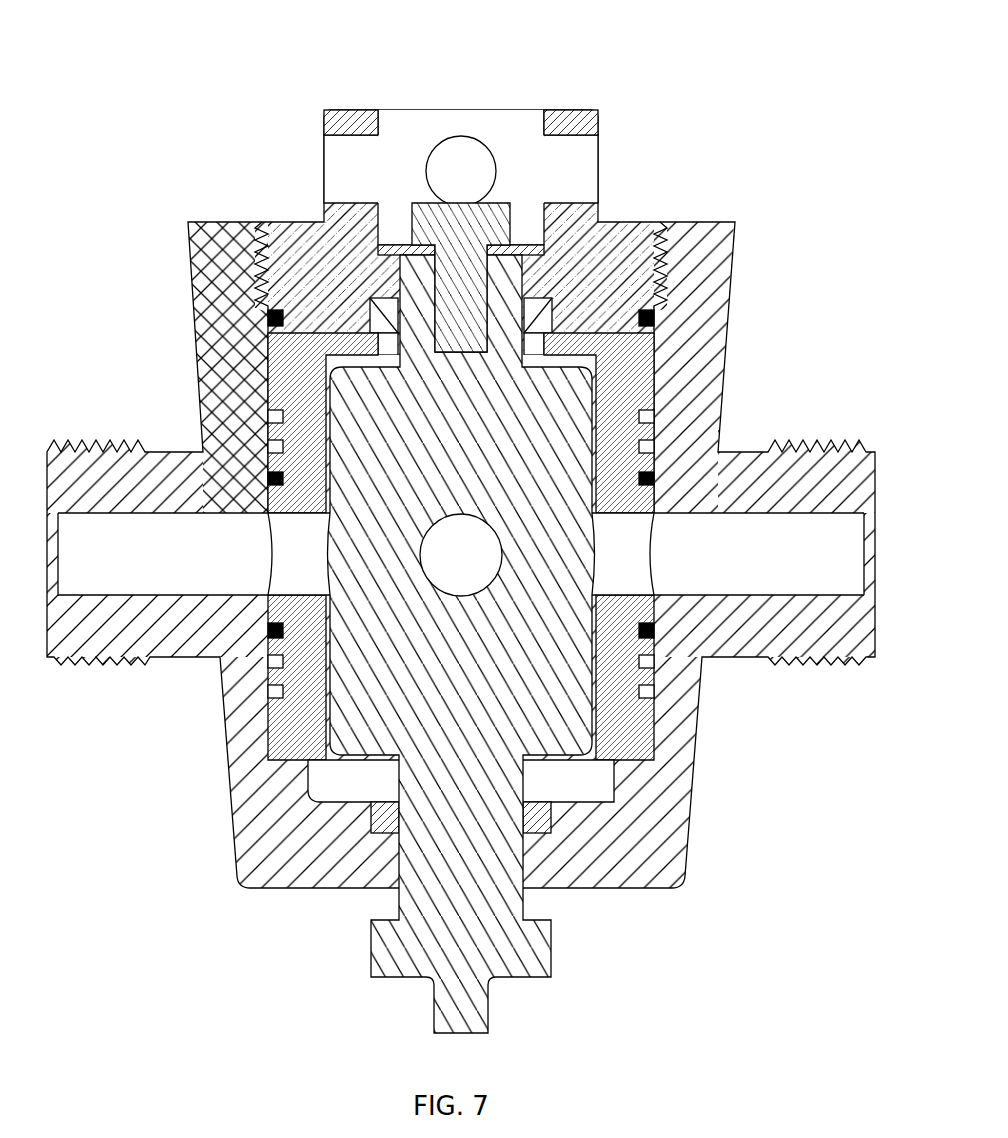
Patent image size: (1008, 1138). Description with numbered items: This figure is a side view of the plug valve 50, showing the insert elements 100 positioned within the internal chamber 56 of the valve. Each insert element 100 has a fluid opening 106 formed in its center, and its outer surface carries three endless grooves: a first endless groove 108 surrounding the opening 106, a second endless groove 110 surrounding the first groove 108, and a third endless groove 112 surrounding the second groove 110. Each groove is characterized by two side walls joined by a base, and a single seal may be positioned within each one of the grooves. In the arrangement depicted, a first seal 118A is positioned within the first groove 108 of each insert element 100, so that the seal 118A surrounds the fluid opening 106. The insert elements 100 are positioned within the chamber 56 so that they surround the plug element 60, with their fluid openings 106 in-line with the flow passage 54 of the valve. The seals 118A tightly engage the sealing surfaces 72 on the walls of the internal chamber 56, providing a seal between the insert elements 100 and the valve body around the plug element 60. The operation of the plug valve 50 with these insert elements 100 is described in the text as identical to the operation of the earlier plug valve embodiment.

The plug valve 50 is at (492, 66).
The flow passage 54 is at (203, 550).
The chamber 56 is at (322, 777).
The plug element 60 is at (563, 395).
The sealing surfaces 72 is at (268, 476).
The insert element 100 is at (308, 735).
The fluid opening 106 is at (313, 550).
The first endless groove 108 is at (268, 660).
The second endless groove 110 is at (268, 413).
The third endless groove 112 is at (268, 312).
The first seal 118A is at (268, 478).